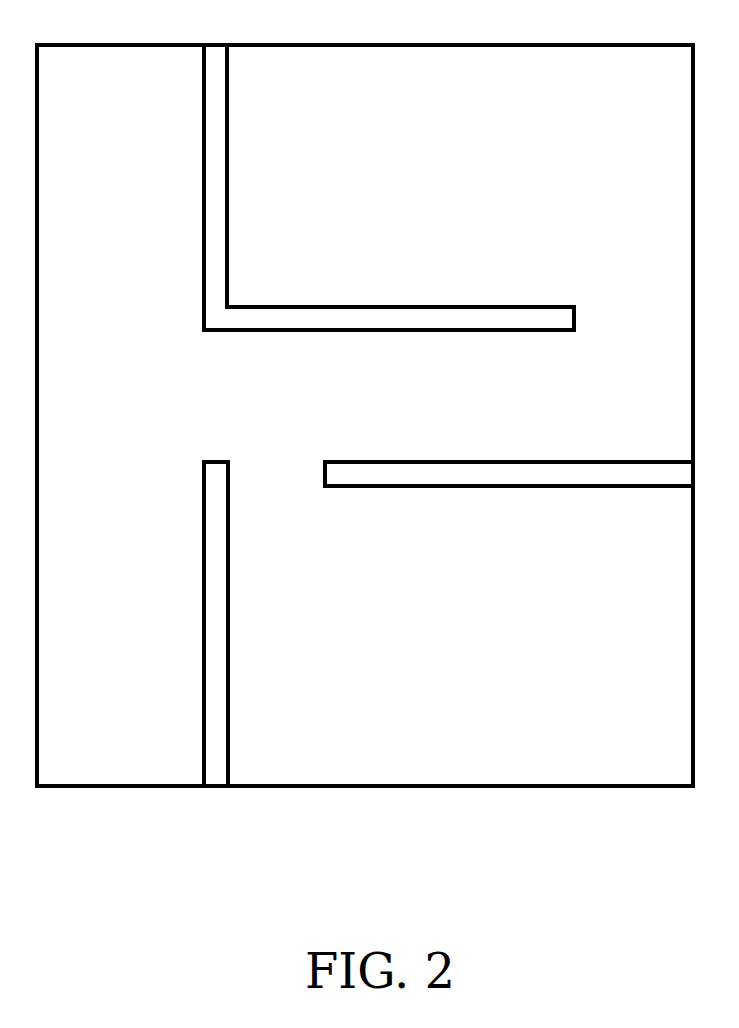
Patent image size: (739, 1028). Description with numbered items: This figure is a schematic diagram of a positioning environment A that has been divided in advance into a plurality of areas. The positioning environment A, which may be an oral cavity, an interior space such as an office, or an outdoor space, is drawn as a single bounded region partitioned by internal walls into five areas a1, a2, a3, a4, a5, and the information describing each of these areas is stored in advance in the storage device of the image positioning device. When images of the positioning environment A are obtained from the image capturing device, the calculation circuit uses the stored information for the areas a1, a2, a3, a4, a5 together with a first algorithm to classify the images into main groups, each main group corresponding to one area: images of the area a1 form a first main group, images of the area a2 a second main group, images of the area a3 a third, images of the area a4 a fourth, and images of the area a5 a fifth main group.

The positioning environment A is at (37, 45).
The area a1 is at (120, 187).
The area a2 is at (165, 624).
The area a3 is at (389, 187).
The area a4 is at (448, 396).
The area a5 is at (509, 561).